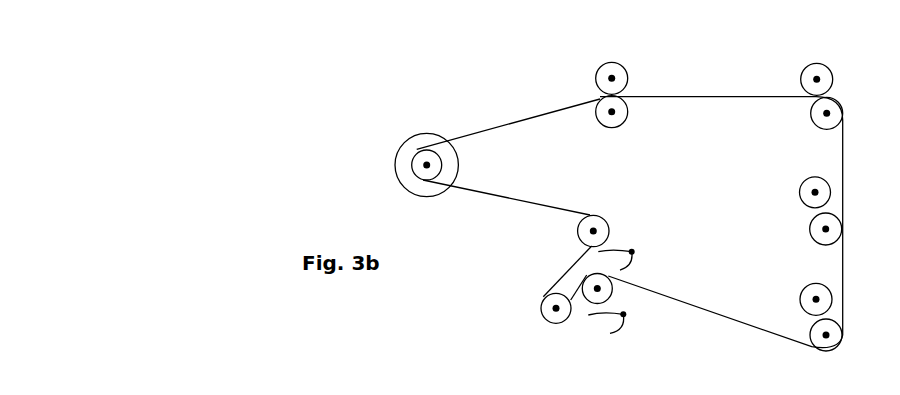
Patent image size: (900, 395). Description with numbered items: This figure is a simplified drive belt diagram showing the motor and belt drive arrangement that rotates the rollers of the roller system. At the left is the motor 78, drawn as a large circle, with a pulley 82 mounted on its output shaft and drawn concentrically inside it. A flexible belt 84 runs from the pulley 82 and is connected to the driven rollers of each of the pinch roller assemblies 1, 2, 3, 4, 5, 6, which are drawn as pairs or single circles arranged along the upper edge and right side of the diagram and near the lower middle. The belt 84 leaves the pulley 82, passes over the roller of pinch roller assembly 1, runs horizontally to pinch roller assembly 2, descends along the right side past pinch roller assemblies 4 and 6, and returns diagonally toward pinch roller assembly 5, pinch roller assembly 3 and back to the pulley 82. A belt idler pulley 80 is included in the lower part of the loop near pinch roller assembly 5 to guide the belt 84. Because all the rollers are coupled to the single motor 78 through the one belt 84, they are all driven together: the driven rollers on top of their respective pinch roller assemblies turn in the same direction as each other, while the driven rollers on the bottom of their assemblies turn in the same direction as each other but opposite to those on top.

The pinch roller assembly 1 is at (603, 83).
The pinch roller assembly 2 is at (818, 83).
The pinch roller assembly 3 is at (601, 222).
The pinch roller assembly 4 is at (814, 199).
The pinch roller assembly 5 is at (608, 291).
The pinch roller assembly 6 is at (819, 303).
The motor 78 is at (400, 178).
The belt idler pulley 80 is at (545, 307).
The pulley 82 is at (417, 155).
The flexible belt 84 is at (773, 95).